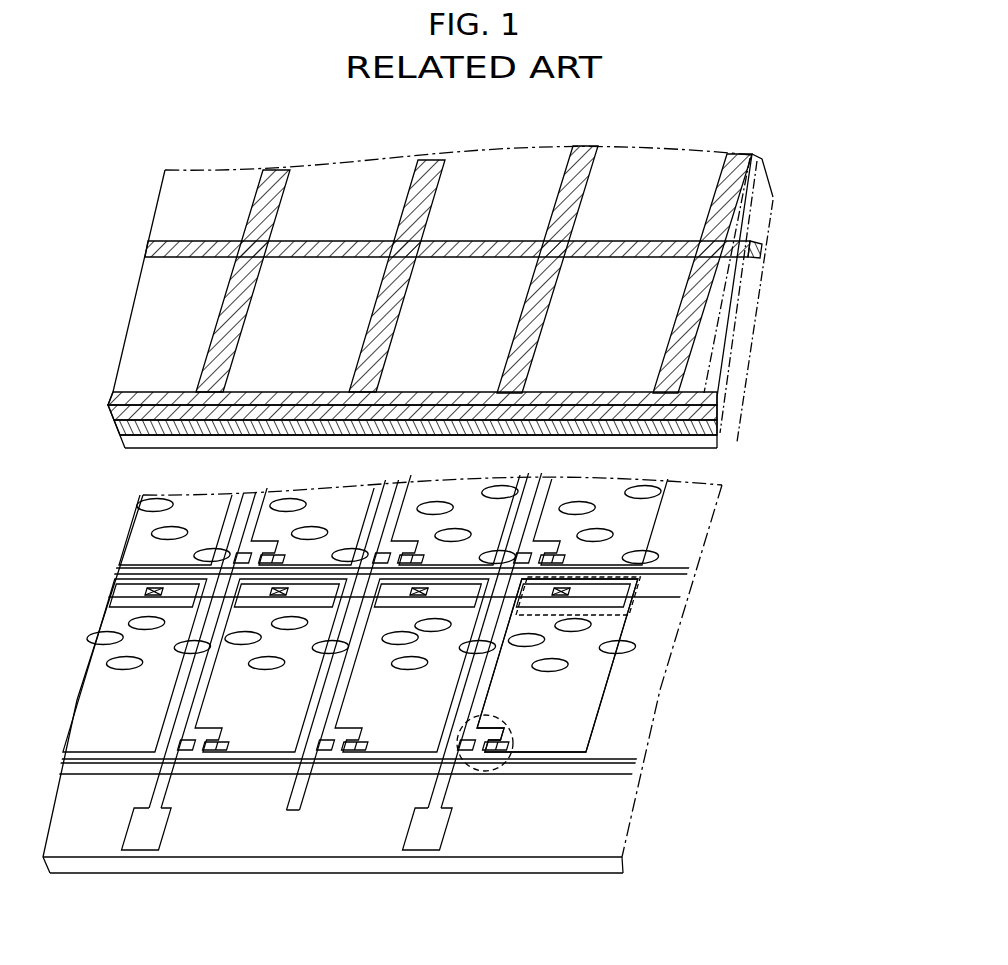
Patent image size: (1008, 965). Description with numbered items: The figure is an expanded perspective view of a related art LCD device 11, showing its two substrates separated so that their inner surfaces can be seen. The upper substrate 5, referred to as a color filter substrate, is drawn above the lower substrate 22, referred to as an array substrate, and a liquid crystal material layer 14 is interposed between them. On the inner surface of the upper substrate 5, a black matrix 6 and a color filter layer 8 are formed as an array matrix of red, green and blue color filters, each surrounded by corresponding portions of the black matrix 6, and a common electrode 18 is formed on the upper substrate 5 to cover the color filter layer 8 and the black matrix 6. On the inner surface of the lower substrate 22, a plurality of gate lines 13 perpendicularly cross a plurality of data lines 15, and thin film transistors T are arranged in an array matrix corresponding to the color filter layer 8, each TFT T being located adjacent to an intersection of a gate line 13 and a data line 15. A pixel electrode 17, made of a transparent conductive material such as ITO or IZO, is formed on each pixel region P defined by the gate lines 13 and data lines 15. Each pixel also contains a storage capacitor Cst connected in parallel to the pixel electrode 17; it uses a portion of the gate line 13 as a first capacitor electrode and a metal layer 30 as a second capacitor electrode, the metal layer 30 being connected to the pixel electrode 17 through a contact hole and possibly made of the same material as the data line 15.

The upper substrate 5 is at (118, 412).
The black matrix 6 is at (760, 253).
The color filter layer 8 is at (688, 208).
The common electrode 18 is at (700, 442).
The LCD device 11 is at (810, 722).
The lower substrate 22 is at (583, 863).
The gate lines 13 is at (597, 768).
The data lines 15 is at (434, 795).
The pixel electrode 17 is at (590, 728).
The metal layer 30 is at (630, 596).
The storage capacitor Cst is at (622, 627).
The thin film transistor T is at (502, 767).
The liquid crystal material layer 14 is at (648, 543).
The pixel region P is at (640, 683).